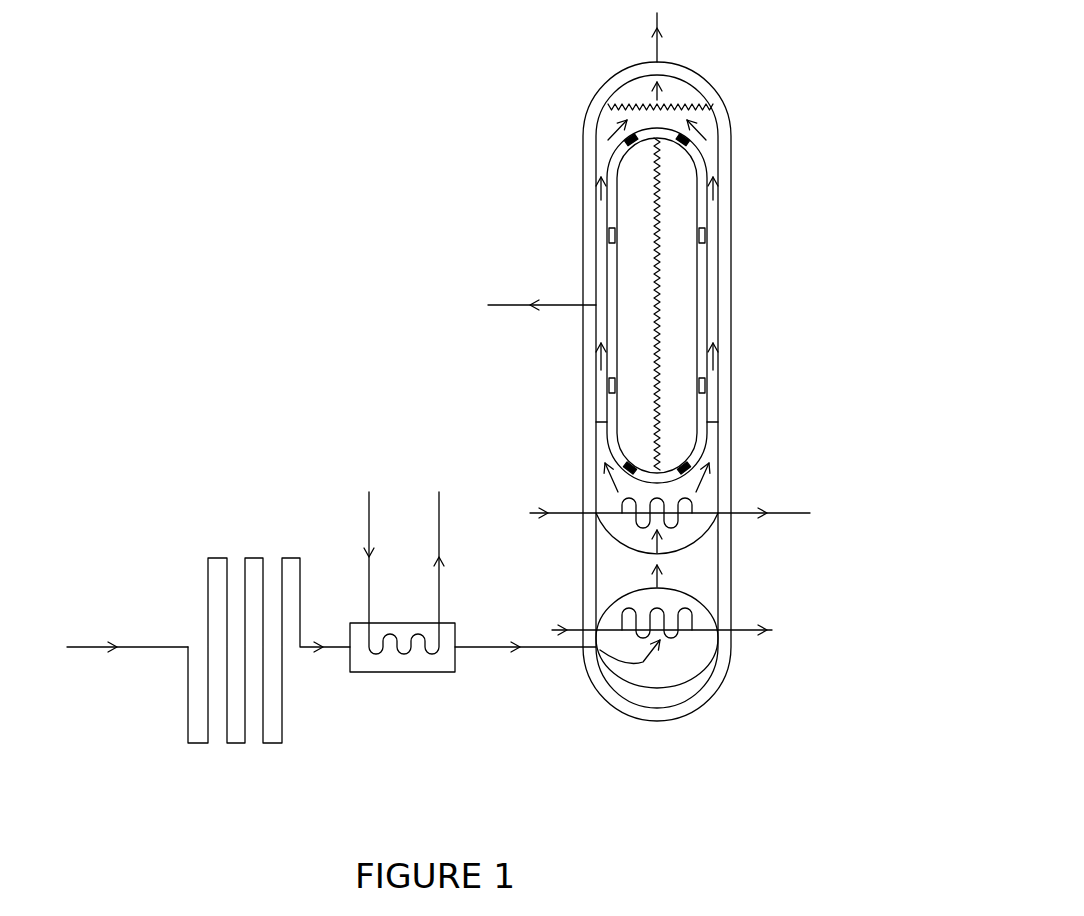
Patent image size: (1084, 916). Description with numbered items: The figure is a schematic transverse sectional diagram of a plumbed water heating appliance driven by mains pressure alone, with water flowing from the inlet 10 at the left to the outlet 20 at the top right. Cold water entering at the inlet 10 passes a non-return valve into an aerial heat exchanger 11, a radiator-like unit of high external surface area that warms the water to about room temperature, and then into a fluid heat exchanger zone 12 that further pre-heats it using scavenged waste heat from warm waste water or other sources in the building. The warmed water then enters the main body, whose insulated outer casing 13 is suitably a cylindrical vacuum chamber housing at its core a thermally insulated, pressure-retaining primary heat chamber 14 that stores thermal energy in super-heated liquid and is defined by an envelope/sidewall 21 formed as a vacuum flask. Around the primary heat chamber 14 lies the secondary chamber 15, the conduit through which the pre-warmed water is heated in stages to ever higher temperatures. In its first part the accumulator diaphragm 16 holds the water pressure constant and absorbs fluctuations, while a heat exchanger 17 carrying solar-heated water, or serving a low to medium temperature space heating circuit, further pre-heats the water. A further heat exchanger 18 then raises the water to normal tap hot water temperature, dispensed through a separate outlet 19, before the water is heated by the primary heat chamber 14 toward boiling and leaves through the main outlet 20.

The inlet 10 is at (82, 630).
The aerial heat exchanger 11 is at (270, 743).
The fluid heat exchanger zone 12 is at (437, 672).
The insulated outer casing 13 is at (723, 683).
The primary heat chamber 14 is at (683, 292).
The secondary chamber 15 is at (617, 577).
The diaphragm 16 is at (698, 622).
The heat exchanger 17 is at (660, 697).
The heat exchanger 18 is at (710, 487).
The outlet 19 is at (558, 303).
The outlet 20 is at (658, 48).
The envelope/sidewall 21 is at (705, 258).